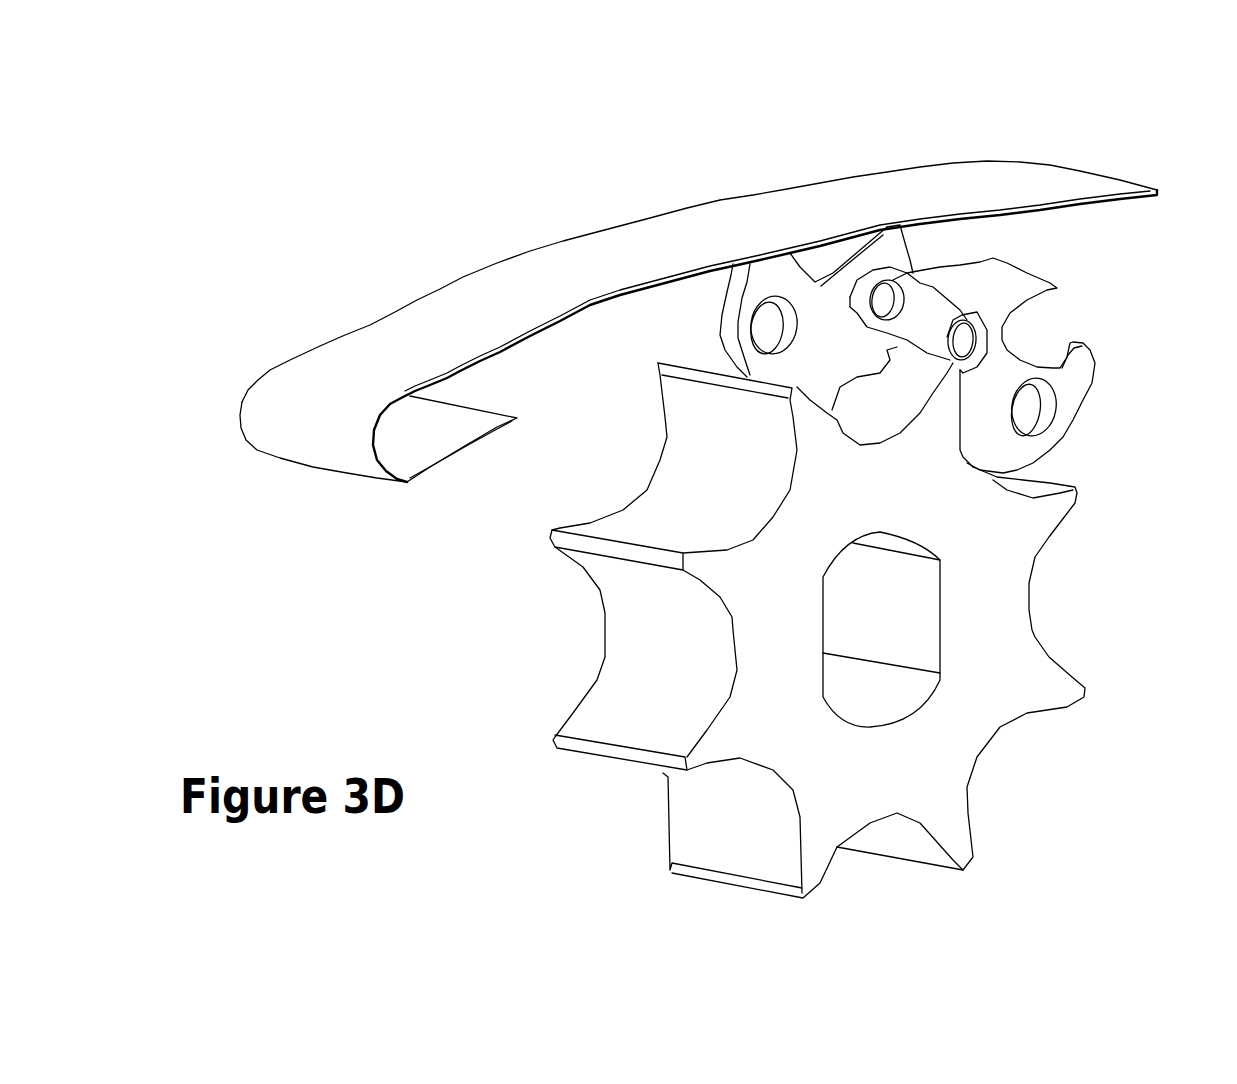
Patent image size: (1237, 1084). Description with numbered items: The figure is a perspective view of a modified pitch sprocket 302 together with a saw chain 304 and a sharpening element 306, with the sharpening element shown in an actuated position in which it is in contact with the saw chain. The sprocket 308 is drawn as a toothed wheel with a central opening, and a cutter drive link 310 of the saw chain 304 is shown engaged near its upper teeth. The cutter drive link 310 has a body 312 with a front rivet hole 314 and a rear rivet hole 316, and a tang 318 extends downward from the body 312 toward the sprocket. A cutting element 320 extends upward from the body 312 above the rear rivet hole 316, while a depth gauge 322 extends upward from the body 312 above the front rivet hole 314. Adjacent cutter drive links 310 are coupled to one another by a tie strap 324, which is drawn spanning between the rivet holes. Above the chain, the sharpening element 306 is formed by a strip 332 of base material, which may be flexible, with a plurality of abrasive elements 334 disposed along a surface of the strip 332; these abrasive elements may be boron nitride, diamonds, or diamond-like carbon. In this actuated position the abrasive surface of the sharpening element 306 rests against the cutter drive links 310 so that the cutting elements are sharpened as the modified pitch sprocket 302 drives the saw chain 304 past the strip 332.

The modified pitch sprocket 302 is at (839, 630).
The saw chain 304 is at (1064, 365).
The sharpening element 306 is at (707, 321).
The sprocket 308 is at (648, 659).
The cutter drive link 310 is at (769, 267).
The body 312 is at (818, 320).
The front rivet hole 314 is at (1025, 407).
The rear rivet hole 316 is at (661, 253).
The tang 318 is at (817, 397).
The cutting element 320 is at (762, 265).
The depth gauge 322 is at (903, 222).
The tie strap 324 is at (910, 302).
The strip 332 is at (463, 298).
The abrasive elements 334 is at (1098, 210).